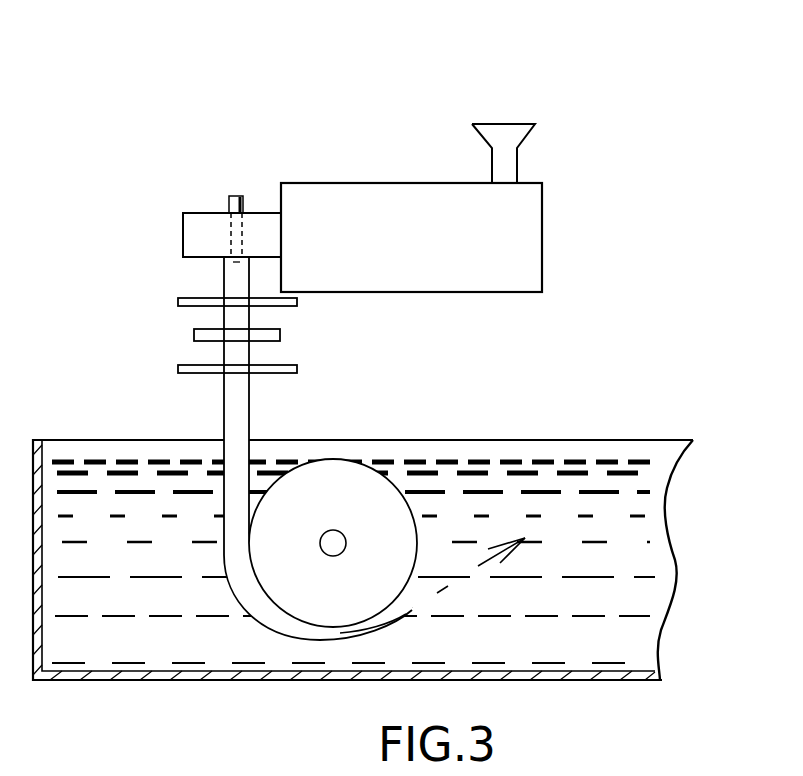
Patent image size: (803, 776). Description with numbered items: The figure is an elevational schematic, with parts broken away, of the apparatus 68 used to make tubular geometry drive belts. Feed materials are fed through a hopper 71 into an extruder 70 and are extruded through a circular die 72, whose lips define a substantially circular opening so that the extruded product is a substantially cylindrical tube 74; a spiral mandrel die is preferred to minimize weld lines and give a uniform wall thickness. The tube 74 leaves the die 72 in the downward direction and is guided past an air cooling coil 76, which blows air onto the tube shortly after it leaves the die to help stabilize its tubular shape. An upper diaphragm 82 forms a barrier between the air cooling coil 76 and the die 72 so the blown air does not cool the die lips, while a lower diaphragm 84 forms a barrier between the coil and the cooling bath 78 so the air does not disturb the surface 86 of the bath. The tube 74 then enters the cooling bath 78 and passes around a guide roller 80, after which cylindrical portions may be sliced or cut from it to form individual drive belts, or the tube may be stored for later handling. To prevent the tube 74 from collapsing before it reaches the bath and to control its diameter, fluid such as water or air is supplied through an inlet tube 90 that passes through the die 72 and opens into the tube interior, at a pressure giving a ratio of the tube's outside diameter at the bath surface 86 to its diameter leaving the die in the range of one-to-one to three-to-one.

The apparatus 68 is at (657, 135).
The extruder 70 is at (355, 183).
The hopper 71 is at (518, 124).
The circular die 72 is at (183, 222).
The cylindrical tube 74 is at (222, 287).
The air cooling coil 76 is at (194, 336).
The cooling bath 78 is at (571, 493).
The guide roller 80 is at (350, 458).
The upper diaphragm 82 is at (178, 302).
The lower diaphragm 84 is at (286, 374).
The surface of the cooling bath 86 is at (498, 465).
The inlet tube 90 is at (228, 207).